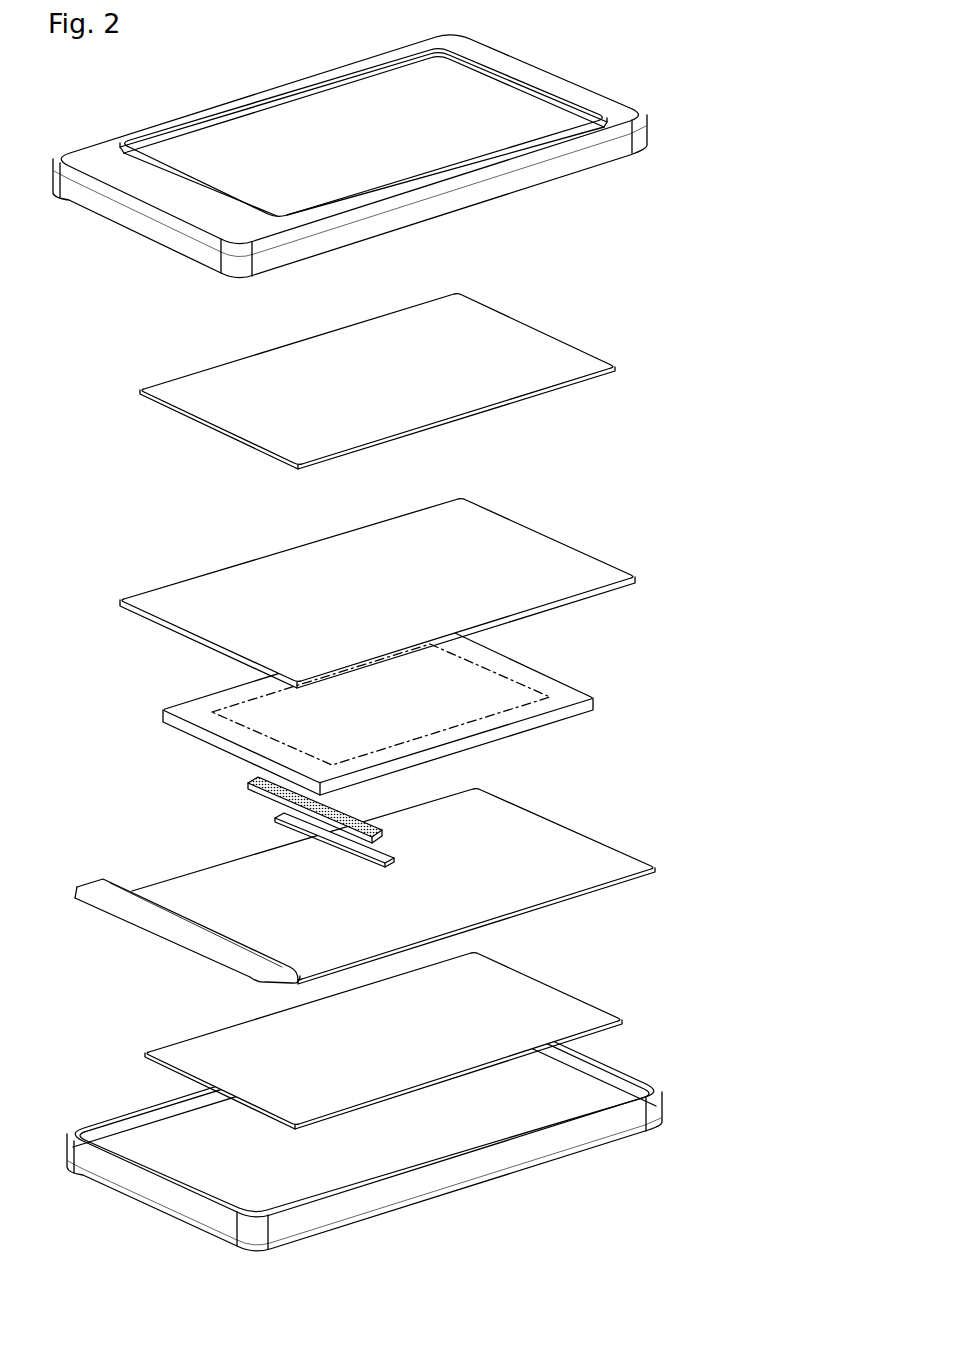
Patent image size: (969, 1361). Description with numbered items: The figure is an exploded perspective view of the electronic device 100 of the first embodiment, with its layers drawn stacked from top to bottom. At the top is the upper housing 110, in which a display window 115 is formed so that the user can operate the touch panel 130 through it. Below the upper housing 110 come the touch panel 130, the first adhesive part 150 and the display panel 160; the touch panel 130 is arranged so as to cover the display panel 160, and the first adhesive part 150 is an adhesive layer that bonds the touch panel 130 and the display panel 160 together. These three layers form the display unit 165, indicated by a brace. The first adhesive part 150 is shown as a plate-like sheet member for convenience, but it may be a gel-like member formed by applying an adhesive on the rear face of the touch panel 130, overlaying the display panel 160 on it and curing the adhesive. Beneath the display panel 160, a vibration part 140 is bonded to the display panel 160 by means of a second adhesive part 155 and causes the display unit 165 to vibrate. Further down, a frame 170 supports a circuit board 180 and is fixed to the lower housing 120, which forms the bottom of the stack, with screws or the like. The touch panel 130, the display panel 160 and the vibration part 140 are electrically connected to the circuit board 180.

The electronic device 100 is at (639, 77).
The upper housing 110 is at (387, 156).
The display window 115 is at (262, 150).
The lower housing 120 is at (636, 1078).
The touch panel 130 is at (446, 381).
The vibration part 140 is at (290, 828).
The first adhesive part 150 is at (548, 538).
The second adhesive part 155 is at (250, 783).
The display panel 160 is at (582, 707).
The display unit 165 is at (488, 544).
The frame 170 is at (517, 815).
The circuit board 180 is at (553, 998).